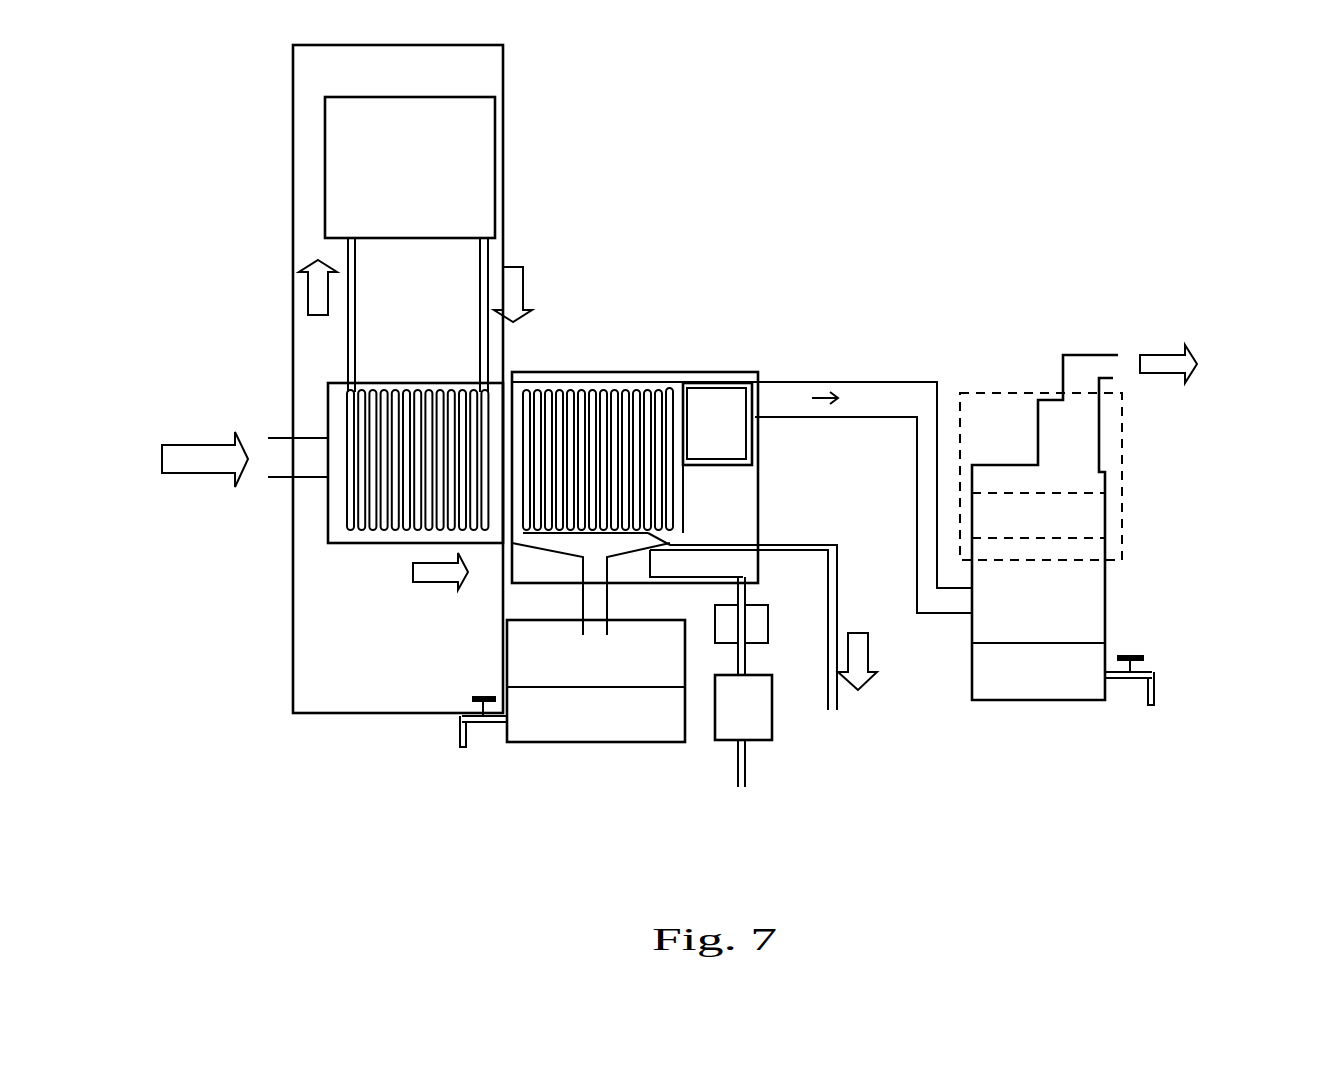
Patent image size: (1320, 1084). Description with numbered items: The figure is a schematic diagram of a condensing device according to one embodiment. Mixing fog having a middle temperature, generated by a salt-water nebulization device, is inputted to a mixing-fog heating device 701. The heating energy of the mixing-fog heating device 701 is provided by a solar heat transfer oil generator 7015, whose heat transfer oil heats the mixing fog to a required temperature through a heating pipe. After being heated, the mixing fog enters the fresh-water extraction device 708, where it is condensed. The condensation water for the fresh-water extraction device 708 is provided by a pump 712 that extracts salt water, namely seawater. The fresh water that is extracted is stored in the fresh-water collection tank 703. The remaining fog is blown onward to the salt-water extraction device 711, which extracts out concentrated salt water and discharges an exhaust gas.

The mixing-fog heating device 701 is at (292, 100).
The solar heat transfer oil generator 7015 is at (482, 96).
The fresh-water extraction device 708 is at (693, 370).
The fresh-water collection tank 703 is at (553, 740).
The pump 712 is at (773, 710).
The salt-water extraction device 711 is at (1122, 463).